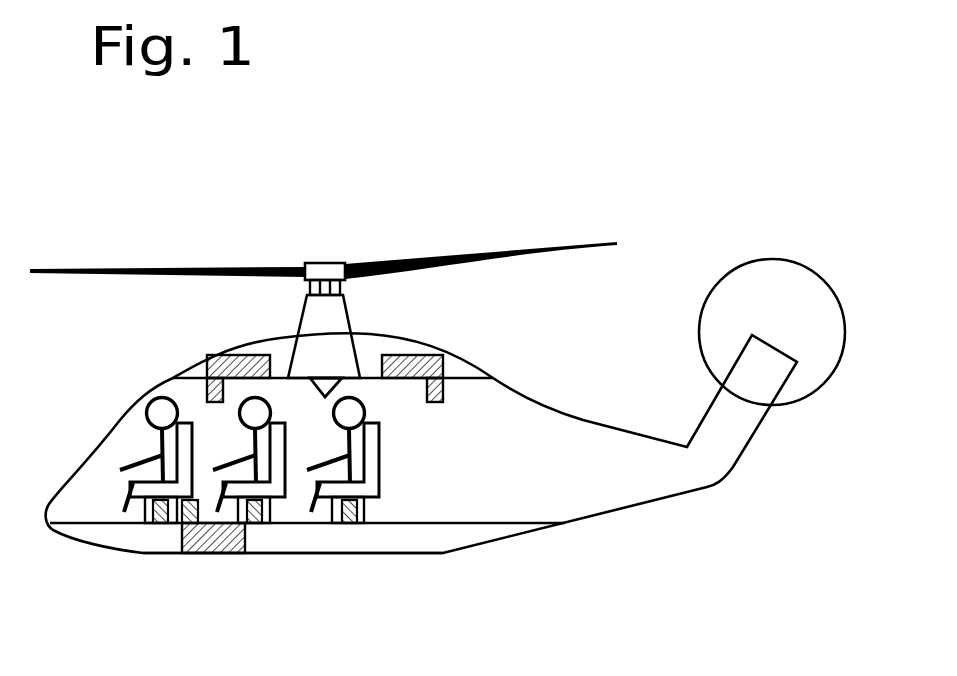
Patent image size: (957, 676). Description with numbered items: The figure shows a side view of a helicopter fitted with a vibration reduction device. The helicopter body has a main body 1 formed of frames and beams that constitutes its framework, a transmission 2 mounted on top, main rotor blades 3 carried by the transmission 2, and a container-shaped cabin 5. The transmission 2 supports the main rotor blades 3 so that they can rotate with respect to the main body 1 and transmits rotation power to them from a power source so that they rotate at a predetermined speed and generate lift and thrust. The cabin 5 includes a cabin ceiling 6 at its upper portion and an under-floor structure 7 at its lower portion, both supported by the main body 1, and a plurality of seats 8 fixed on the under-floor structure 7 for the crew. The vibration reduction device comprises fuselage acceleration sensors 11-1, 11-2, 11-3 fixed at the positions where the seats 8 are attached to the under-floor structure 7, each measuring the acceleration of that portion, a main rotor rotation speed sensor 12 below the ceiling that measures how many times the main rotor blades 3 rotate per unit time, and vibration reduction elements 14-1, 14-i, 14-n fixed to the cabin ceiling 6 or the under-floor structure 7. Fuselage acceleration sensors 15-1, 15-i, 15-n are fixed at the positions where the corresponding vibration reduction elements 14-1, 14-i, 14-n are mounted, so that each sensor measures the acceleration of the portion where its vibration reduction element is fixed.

The main body 1 is at (586, 418).
The transmission 2 is at (305, 313).
The main rotor blades 3 is at (528, 253).
The cabin 5 is at (402, 462).
The cabin ceiling 6 is at (195, 377).
The under-floor structure 7 is at (83, 523).
The seats 8 is at (140, 495).
The fuselage acceleration sensor 11-1 is at (162, 523).
The fuselage acceleration sensor 11-2 is at (255, 523).
The fuselage acceleration sensor 11-3 is at (350, 523).
The main rotor rotation speed sensor 12 is at (313, 381).
The vibration reduction element 14-1 is at (207, 553).
The vibration reduction element 14-n is at (228, 355).
The vibration reduction element 14-i is at (422, 355).
The fuselage acceleration sensor 15-1 is at (193, 553).
The fuselage acceleration sensor 15-n is at (207, 393).
The fuselage acceleration sensor 15-i is at (443, 385).